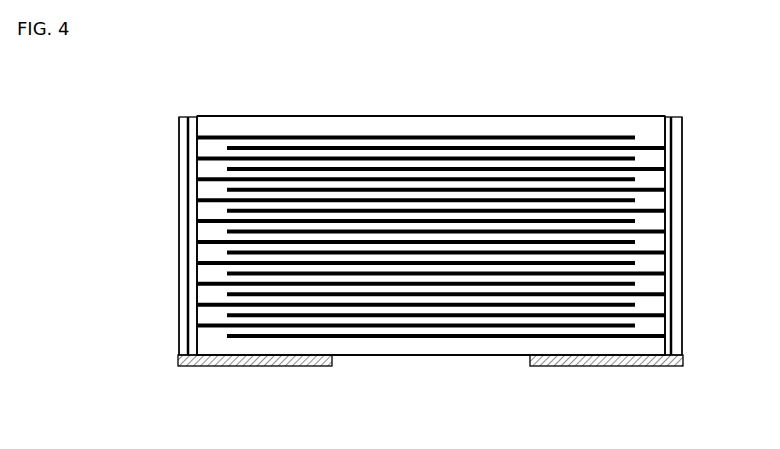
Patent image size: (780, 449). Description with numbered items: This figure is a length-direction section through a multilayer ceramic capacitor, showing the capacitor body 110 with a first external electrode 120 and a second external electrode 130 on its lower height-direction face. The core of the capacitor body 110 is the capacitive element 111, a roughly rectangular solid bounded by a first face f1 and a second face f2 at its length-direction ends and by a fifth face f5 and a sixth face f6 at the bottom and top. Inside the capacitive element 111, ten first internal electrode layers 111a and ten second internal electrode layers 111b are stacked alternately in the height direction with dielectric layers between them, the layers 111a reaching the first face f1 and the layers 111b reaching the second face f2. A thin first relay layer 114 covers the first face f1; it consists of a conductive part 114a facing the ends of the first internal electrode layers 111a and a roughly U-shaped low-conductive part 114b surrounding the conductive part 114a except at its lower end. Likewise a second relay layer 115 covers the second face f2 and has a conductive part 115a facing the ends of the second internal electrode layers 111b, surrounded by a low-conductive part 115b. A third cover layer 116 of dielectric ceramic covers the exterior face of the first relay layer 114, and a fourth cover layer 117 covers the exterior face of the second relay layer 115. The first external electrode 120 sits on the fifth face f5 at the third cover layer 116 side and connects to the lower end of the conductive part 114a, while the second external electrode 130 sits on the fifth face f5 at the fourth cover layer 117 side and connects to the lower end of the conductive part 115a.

The capacitor body 110 is at (184, 116).
The capacitive element 111 is at (422, 115).
The first internal electrode layer 111a is at (565, 135).
The second internal electrode layer 111b is at (617, 146).
The first relay layer 114 is at (147, 236).
The conductive part 114a is at (189, 166).
The low-conductive part 114b is at (183, 123).
The second relay layer 115 is at (712, 236).
The conductive part 115a is at (673, 170).
The low-conductive part 115b is at (676, 121).
The third cover layer 116 is at (183, 250).
The fourth cover layer 117 is at (677, 255).
The first external electrode 120 is at (267, 368).
The second external electrode 130 is at (593, 368).
The first face f1 is at (195, 116).
The second face f2 is at (658, 117).
The fifth face f5 is at (467, 357).
The sixth face f6 is at (467, 115).